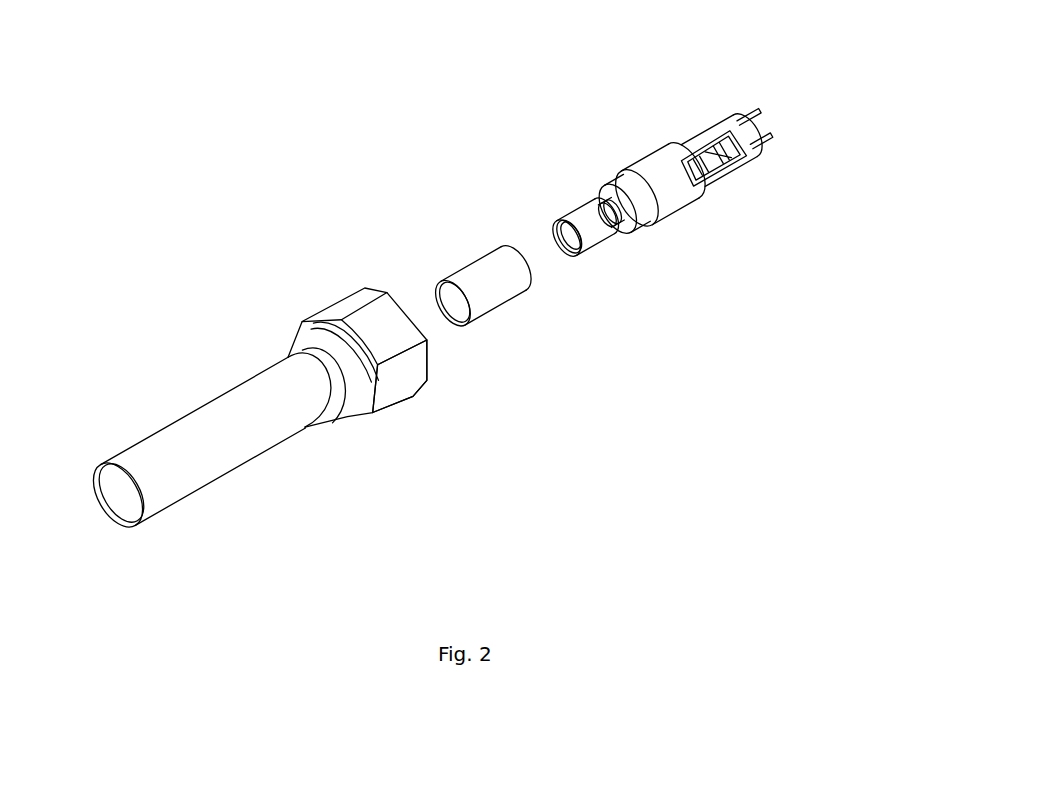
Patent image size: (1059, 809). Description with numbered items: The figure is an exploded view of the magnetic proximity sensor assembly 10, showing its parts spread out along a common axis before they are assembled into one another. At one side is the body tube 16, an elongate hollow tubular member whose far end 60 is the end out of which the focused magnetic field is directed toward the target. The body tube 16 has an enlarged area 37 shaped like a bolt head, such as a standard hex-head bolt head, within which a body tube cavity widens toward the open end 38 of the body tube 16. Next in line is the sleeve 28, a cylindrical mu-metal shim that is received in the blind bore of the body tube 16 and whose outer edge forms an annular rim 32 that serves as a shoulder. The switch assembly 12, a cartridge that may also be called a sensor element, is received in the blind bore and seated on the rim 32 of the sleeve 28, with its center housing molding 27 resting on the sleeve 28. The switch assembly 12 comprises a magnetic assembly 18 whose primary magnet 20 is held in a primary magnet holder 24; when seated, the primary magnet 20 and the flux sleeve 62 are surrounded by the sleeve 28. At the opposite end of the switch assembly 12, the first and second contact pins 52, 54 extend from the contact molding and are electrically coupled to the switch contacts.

The magnetic proximity sensor assembly 10 is at (535, 152).
The switch assembly 12 is at (743, 167).
The body tube 16 is at (192, 463).
The magnetic assembly 18 is at (568, 252).
The primary magnet 20 is at (566, 228).
The primary magnet holder 24 is at (549, 222).
The center housing molding 27 is at (655, 207).
The sleeve 28 is at (471, 233).
The rim 32 is at (527, 262).
The enlarged area 37 is at (403, 383).
The open end 38 is at (407, 407).
The first contact pin 52 is at (772, 138).
The second contact pin 54 is at (758, 118).
The end 60 is at (122, 500).
The flux sleeve 62 is at (640, 218).